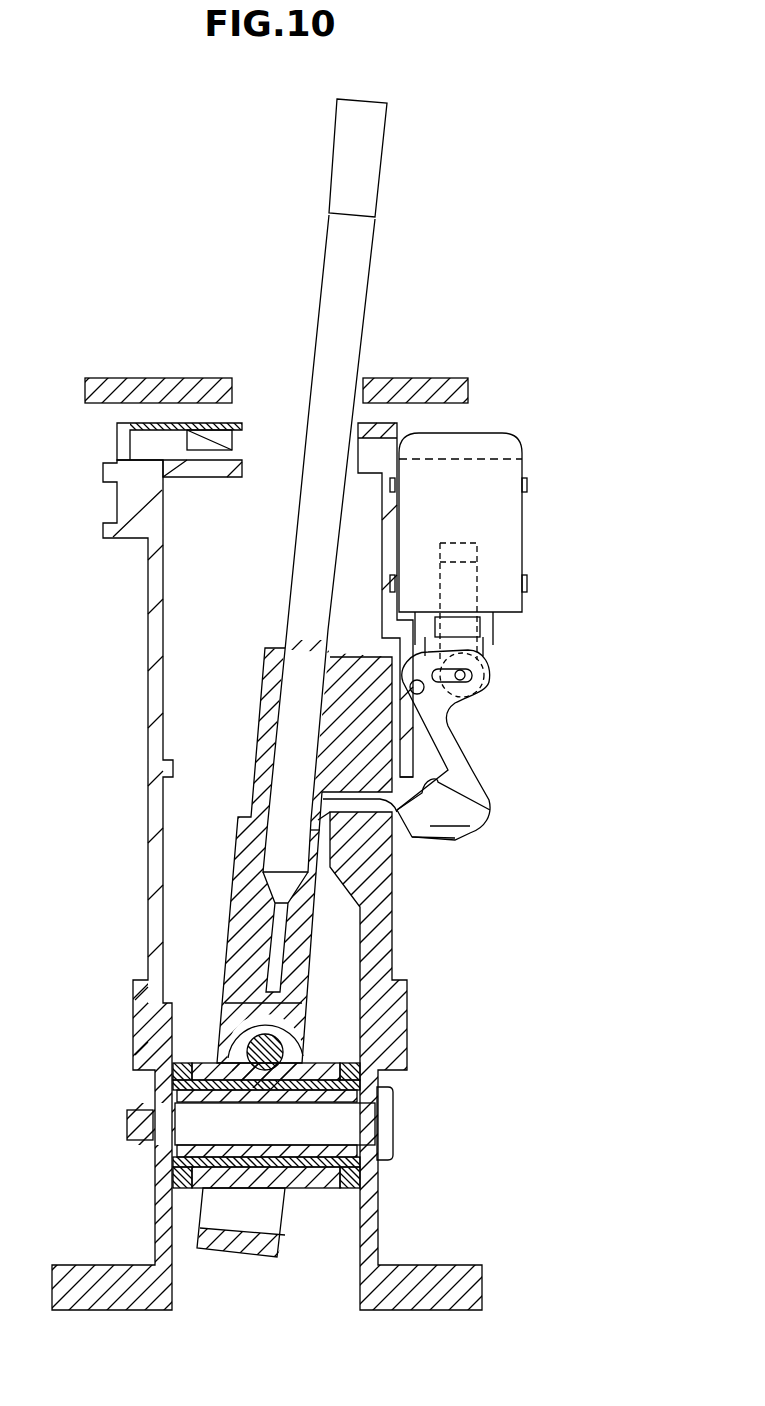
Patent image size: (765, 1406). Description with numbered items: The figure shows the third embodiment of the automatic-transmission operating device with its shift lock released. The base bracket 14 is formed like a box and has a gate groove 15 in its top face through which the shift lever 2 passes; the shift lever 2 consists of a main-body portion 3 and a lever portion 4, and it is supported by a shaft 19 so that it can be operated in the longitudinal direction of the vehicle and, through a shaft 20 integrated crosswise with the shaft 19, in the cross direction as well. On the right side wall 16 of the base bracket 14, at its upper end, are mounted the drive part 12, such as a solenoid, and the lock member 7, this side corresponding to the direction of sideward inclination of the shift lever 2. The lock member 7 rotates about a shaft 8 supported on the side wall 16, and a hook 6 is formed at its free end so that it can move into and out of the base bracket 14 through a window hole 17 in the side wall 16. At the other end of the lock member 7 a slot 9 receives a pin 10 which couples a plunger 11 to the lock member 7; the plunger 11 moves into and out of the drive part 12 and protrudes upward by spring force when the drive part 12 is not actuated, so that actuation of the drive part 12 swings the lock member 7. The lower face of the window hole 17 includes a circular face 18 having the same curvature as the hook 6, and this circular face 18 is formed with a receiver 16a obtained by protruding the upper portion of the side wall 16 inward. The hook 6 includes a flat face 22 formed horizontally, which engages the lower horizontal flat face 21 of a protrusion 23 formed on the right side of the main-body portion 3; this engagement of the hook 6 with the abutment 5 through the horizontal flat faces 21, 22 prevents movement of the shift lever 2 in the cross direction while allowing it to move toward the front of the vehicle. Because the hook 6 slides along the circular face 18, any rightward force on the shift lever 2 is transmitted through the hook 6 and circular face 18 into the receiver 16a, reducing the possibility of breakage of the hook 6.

The shift lever 2 is at (380, 293).
The main-body portion 3 is at (233, 892).
The lever portion 4 is at (293, 560).
The abutment 5 is at (376, 783).
The hook 6 is at (443, 781).
The lock member 7 is at (470, 752).
The shaft 8 is at (410, 687).
The slot 9 is at (468, 682).
The pin 10 is at (473, 700).
The plunger 11 is at (483, 633).
The drive part 12 is at (523, 530).
The base bracket 14 is at (148, 697).
The gate groove 15 is at (243, 467).
The side wall 16 is at (390, 957).
The receiver 16a is at (323, 883).
The window hole 17 is at (355, 800).
The circular face 18 is at (372, 820).
The shaft 19 is at (395, 1120).
The shaft 20 is at (280, 1050).
The lower horizontal flat face 21 is at (427, 828).
The flat face 22 is at (430, 775).
The protrusion 23 is at (382, 752).